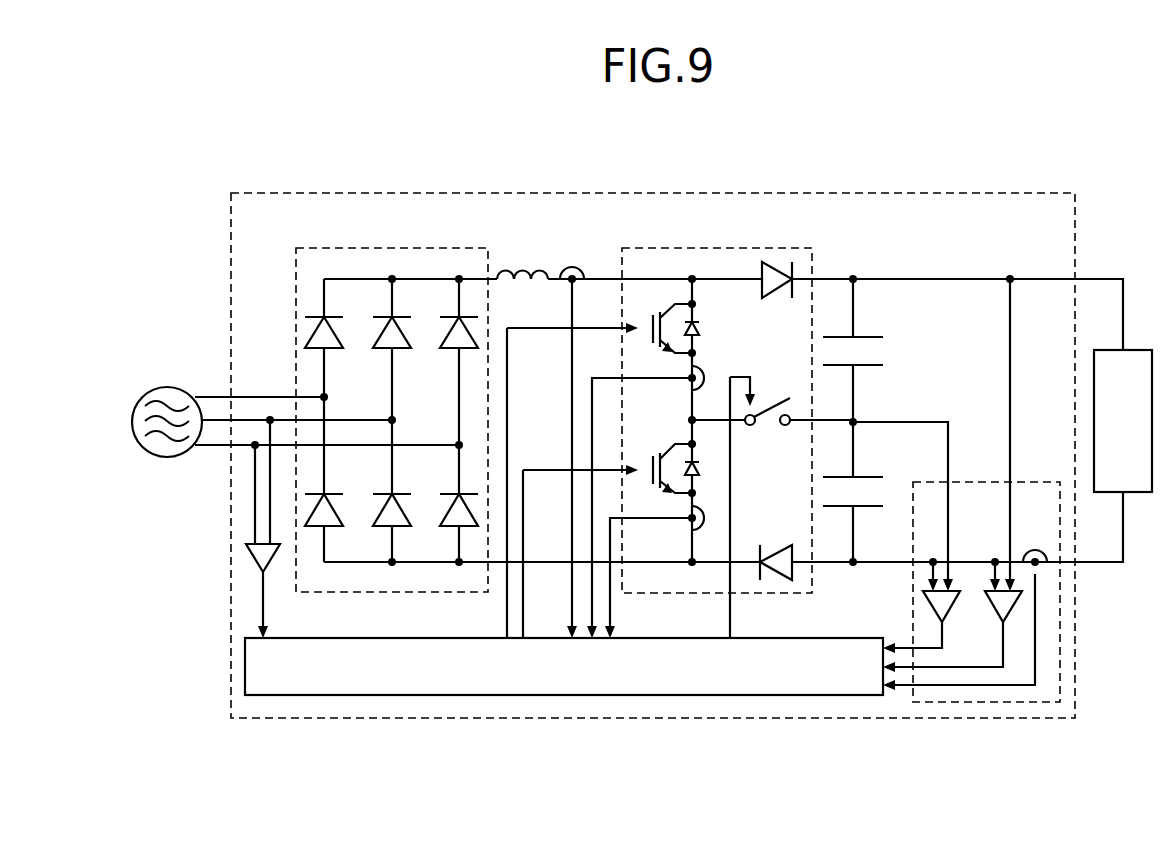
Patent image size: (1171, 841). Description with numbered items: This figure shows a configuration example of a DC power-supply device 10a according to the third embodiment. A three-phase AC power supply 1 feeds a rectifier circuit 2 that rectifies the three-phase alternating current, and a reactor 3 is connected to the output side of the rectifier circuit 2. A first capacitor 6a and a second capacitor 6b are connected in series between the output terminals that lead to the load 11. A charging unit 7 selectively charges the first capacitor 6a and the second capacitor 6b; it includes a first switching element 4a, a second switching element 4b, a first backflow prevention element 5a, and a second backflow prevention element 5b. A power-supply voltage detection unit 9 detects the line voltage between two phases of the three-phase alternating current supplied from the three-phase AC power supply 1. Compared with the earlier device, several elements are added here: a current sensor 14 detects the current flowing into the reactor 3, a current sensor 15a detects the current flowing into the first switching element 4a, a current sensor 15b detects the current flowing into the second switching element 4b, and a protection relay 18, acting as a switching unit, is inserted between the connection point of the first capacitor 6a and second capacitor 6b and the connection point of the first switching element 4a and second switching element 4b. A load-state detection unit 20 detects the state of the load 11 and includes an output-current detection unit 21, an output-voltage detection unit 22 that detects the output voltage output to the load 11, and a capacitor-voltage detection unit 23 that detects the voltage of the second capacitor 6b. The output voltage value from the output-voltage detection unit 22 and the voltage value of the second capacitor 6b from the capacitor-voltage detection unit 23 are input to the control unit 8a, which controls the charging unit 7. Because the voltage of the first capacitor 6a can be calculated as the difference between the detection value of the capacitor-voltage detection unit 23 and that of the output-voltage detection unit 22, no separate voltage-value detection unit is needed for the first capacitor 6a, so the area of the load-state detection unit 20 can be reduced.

The three-phase AC power supply 1 is at (165, 386).
The rectifier circuit 2 is at (355, 248).
The reactor 3 is at (515, 268).
The current sensor 14 is at (570, 266).
The charging unit 7 is at (683, 248).
The first switching element 4a is at (650, 340).
The second switching element 4b is at (650, 452).
The current sensor 15a is at (704, 378).
The current sensor 15b is at (704, 518).
The protection relay 18 is at (768, 399).
The first backflow prevention element 5a is at (770, 298).
The second backflow prevention element 5b is at (776, 545).
The first capacitor 6a is at (833, 337).
The second capacitor 6b is at (833, 477).
The control unit 8a is at (320, 638).
The power-supply voltage detection unit 9 is at (252, 562).
The DC power-supply device 10a is at (937, 193).
The load 11 is at (1137, 350).
The load-state detection unit 20 is at (980, 482).
The output-current detection unit 21 is at (1033, 549).
The output-voltage detection unit 22 is at (993, 607).
The capacitor-voltage detection unit 23 is at (925, 611).